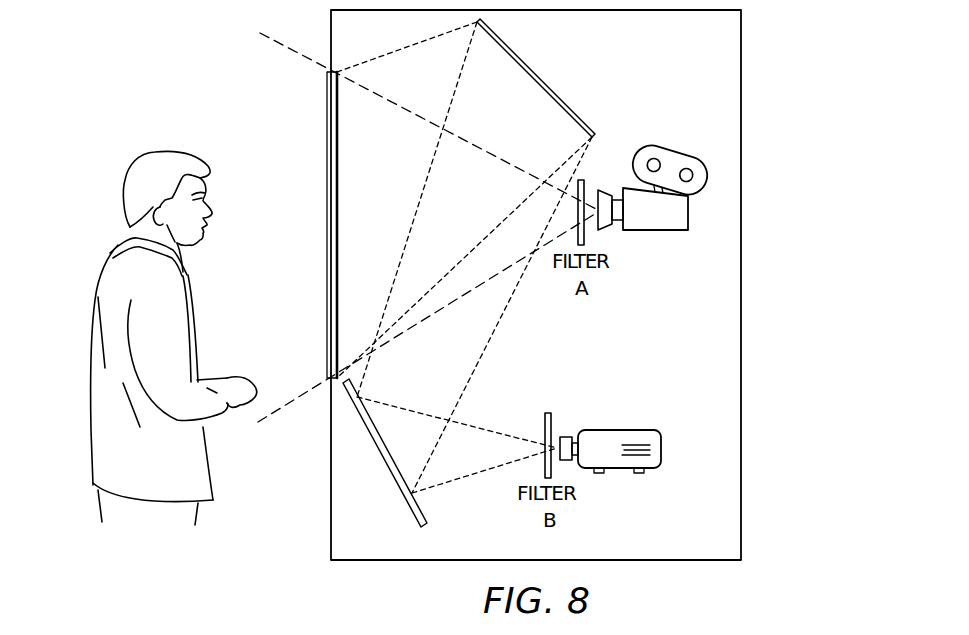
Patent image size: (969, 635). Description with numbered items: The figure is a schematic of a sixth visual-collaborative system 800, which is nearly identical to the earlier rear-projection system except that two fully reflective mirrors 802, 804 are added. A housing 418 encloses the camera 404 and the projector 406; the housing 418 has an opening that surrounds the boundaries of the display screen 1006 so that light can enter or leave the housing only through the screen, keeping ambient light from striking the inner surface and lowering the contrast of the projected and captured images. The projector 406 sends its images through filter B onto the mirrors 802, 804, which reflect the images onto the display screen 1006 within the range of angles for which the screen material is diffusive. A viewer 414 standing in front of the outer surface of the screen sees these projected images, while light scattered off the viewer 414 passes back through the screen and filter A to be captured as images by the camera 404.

The visual-collaborative system 800 is at (791, 60).
The housing 418 is at (744, 322).
The screen 1006 is at (338, 160).
The mirror 804 is at (547, 86).
The camera 404 is at (673, 150).
The projector 406 is at (618, 430).
The mirror 802 is at (382, 456).
The viewer 414 is at (100, 266).